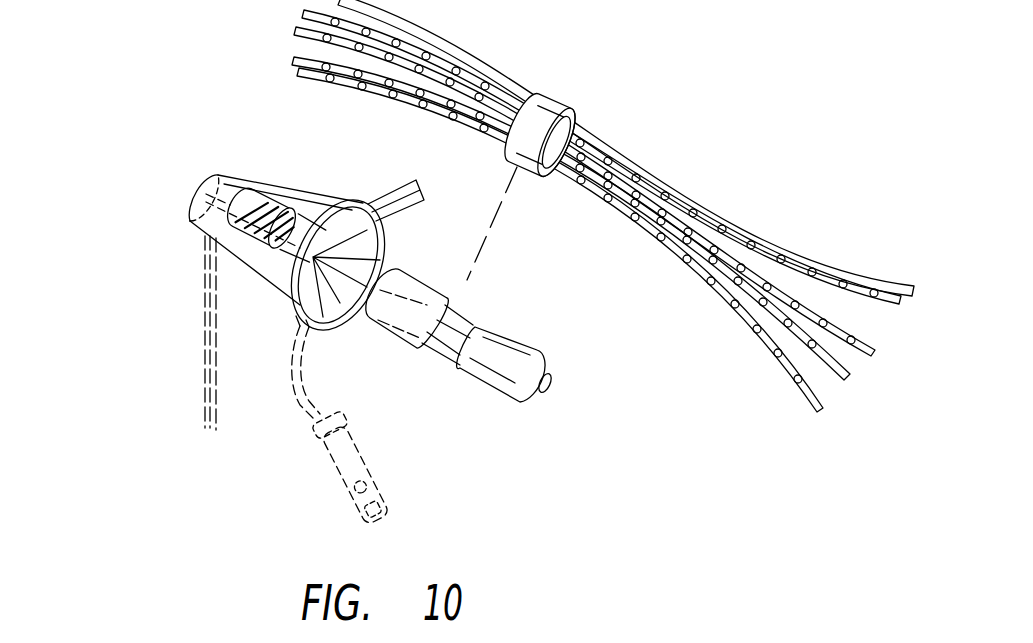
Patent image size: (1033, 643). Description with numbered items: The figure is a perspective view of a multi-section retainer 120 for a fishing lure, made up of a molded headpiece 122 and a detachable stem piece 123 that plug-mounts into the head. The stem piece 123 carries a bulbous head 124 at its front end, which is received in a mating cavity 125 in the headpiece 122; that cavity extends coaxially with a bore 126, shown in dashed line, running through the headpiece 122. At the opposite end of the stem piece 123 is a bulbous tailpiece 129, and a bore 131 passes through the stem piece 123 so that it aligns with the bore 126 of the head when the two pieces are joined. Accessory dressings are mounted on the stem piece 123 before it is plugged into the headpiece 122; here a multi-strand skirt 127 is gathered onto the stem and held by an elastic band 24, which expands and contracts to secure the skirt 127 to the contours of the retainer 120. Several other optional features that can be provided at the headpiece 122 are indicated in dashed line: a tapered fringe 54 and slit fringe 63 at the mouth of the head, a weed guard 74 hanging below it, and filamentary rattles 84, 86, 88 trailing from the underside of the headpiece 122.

The retainer 120 is at (168, 60).
The headpiece 122 is at (222, 175).
The bulbous head 124 is at (397, 340).
The mating cavity 125 is at (290, 210).
The bore 126 is at (198, 206).
The slit fringe 63 is at (388, 190).
The band 24 is at (547, 98).
The skirt 127 is at (633, 170).
The stem piece 123 is at (506, 350).
The bulbous tailpiece 129 is at (558, 366).
The bore 131 is at (553, 398).
The tapered fringe 54 is at (296, 314).
The weed guard 74 is at (203, 300).
The filamentary rattle 84 is at (297, 413).
The filamentary rattle 86 is at (317, 437).
The filamentary rattle 88 is at (343, 484).